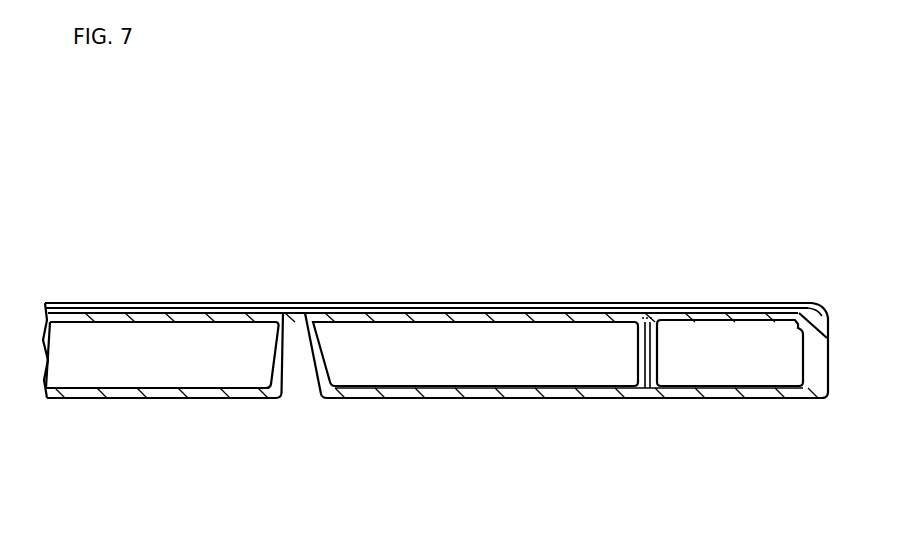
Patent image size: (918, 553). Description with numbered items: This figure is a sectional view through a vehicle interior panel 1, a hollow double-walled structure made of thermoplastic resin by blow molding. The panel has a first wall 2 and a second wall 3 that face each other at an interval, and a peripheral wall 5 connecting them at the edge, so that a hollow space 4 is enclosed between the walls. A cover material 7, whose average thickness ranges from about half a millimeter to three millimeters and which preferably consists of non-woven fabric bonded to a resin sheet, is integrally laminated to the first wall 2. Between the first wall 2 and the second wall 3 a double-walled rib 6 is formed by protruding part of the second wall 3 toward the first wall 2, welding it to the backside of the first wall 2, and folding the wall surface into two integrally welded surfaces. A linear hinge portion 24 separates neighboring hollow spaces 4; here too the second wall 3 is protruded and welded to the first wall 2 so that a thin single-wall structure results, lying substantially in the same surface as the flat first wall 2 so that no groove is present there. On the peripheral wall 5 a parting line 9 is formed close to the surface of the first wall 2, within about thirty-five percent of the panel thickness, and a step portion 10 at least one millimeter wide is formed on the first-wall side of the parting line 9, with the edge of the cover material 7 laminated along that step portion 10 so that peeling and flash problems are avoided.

The vehicle interior panel 1 is at (470, 257).
The first wall 2 is at (532, 303).
The cover material 7 is at (590, 303).
The hinge portion 24 is at (300, 330).
The hollow space 4 is at (475, 350).
The second wall 3 is at (528, 397).
The double-walled rib 6 is at (660, 348).
The peripheral wall 5 is at (828, 353).
The step portion 10 is at (820, 308).
The parting line 9 is at (827, 317).